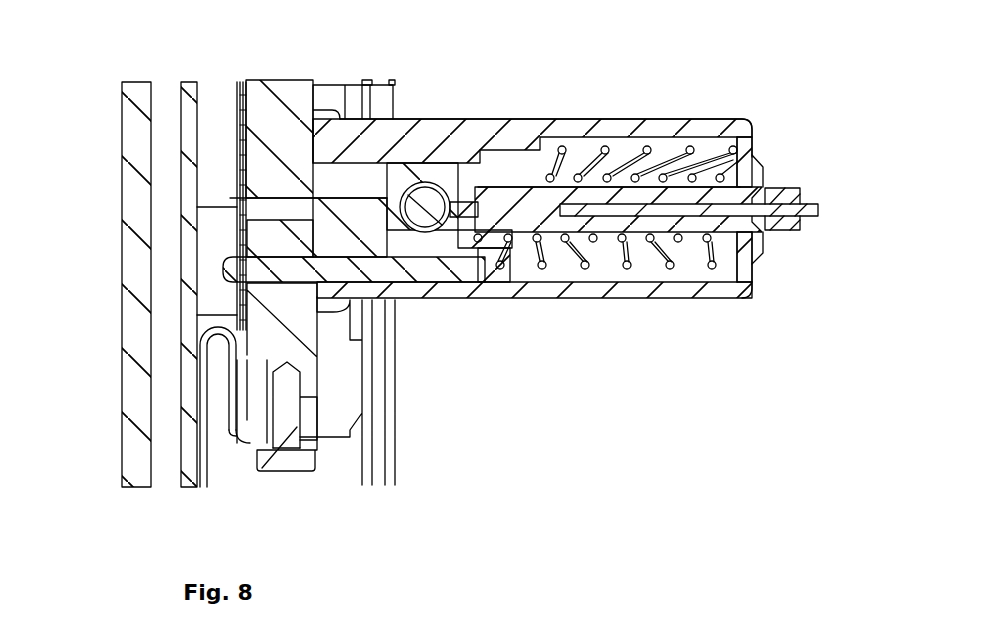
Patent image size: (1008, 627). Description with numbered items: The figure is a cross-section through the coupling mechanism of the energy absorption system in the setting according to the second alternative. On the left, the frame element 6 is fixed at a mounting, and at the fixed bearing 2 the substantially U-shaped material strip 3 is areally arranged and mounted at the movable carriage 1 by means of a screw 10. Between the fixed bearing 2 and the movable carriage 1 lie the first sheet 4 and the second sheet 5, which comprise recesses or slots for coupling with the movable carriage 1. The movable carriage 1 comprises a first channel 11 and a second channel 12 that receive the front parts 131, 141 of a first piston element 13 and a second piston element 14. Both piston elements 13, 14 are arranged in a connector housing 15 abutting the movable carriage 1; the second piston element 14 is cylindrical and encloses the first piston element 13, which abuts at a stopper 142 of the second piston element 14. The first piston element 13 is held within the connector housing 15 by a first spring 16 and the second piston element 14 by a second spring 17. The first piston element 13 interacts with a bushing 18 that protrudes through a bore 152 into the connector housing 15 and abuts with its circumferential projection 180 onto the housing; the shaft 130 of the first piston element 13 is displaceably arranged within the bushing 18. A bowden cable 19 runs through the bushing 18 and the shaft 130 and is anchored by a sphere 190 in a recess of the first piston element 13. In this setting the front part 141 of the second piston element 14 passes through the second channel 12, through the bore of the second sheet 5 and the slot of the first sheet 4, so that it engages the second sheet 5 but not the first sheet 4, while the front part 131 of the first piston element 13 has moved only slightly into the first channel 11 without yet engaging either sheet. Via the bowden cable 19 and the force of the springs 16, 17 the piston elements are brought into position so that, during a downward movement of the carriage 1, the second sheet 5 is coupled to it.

The movable carriage 1 is at (297, 311).
The fixed bearing 2 is at (182, 138).
The material strip 3 is at (203, 378).
The first sheet 4 is at (237, 82).
The second sheet 5 is at (242, 85).
The frame element 6 is at (122, 394).
The screw 10 is at (285, 463).
The first channel 11 is at (273, 207).
The second channel 12 is at (250, 253).
The first piston element 13 is at (443, 175).
The second piston element 14 is at (397, 142).
The connector housing 15 is at (730, 305).
The first spring 16 is at (582, 258).
The second spring 17 is at (633, 262).
The bushing 18 is at (785, 231).
The bowden cable 19 is at (795, 204).
The shaft 130 is at (522, 193).
The front part 131 is at (310, 198).
The front part 141 is at (232, 258).
The stopper 142 is at (465, 248).
The bore 152 is at (750, 243).
The circumferential projection 180 is at (763, 167).
The sphere 190 is at (420, 210).